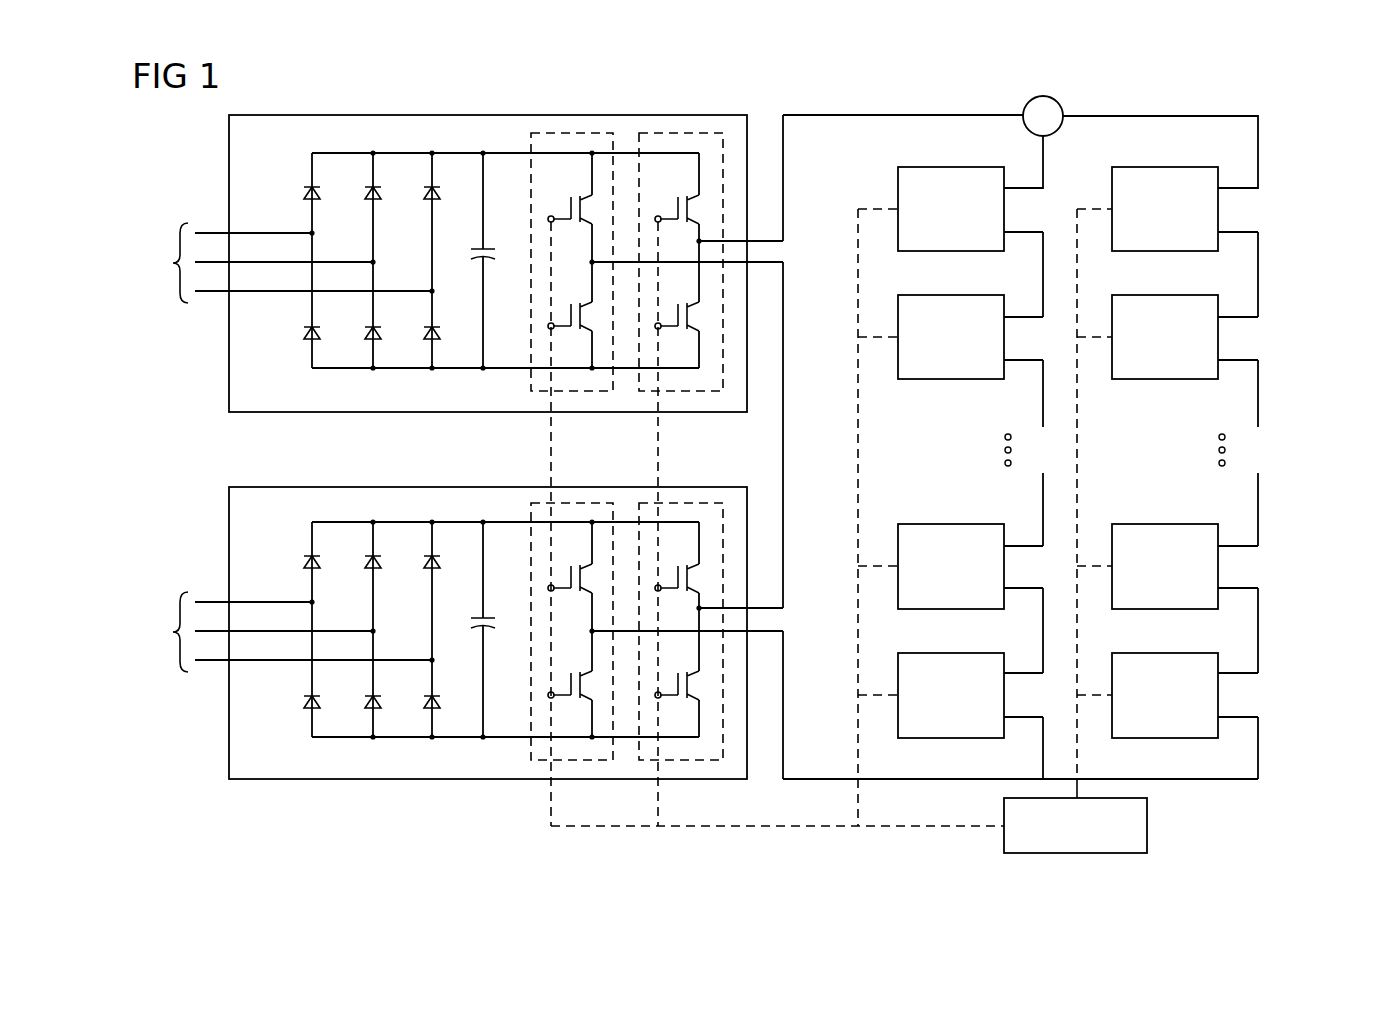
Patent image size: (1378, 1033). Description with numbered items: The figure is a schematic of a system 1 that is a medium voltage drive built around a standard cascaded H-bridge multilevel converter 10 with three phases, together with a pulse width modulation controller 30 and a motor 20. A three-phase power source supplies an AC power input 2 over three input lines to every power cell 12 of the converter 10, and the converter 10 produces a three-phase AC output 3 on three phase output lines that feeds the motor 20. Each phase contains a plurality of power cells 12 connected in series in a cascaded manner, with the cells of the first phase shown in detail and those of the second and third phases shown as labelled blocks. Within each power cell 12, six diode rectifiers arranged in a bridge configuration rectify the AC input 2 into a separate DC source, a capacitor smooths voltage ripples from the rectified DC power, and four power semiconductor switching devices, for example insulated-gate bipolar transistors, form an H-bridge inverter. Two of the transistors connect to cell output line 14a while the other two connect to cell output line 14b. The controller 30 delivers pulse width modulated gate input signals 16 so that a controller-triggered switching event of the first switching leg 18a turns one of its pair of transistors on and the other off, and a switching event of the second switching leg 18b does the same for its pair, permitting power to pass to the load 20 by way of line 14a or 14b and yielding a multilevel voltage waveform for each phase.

The system 1 is at (1268, 84).
The AC power input 2 is at (173, 263).
The output 3 is at (895, 115).
The cascaded H-bridge multilevel converter 10 is at (1267, 394).
The power cell 12 is at (419, 412).
The cell output line 14a is at (783, 396).
The cell output line 14b is at (783, 210).
The gate input signals 16 is at (551, 814).
The first switching leg 18a is at (574, 391).
The second switching leg 18b is at (683, 391).
The motor 20 is at (1057, 101).
The pulse width modulation controller 30 is at (1147, 826).